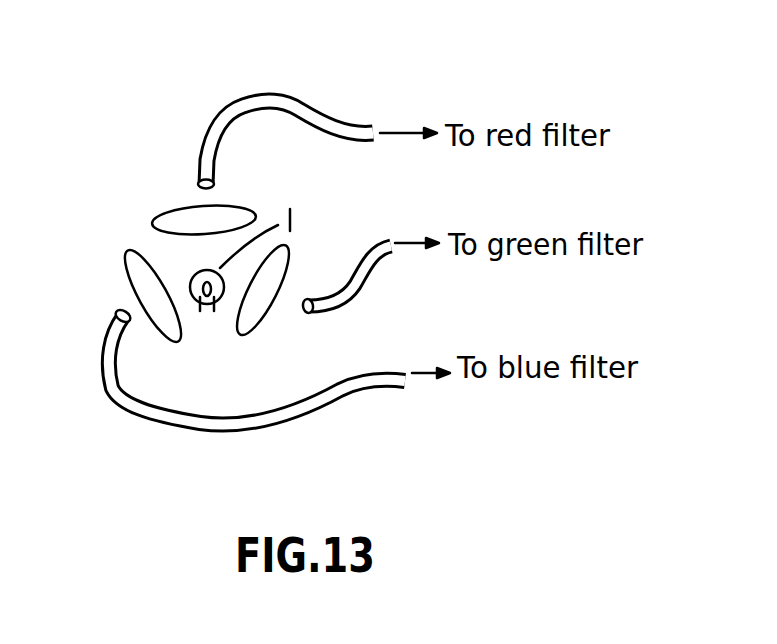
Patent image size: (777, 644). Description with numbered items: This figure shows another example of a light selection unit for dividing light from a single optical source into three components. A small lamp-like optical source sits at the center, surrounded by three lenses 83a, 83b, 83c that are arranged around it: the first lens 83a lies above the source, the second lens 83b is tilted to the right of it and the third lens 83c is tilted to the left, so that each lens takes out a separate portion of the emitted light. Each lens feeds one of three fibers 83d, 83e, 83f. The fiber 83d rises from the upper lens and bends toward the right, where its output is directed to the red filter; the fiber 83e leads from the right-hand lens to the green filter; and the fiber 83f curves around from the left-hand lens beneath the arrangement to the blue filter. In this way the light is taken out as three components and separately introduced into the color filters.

The lens 83a is at (236, 205).
The lens 83b is at (270, 300).
The lens 83c is at (135, 278).
The fiber 83d is at (316, 103).
The fiber 83e is at (377, 260).
The fiber 83f is at (378, 397).